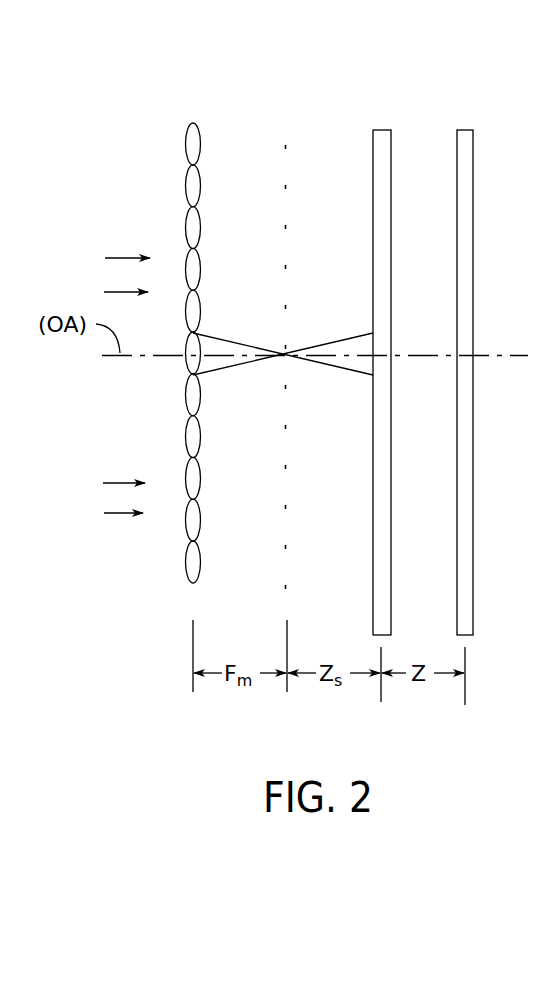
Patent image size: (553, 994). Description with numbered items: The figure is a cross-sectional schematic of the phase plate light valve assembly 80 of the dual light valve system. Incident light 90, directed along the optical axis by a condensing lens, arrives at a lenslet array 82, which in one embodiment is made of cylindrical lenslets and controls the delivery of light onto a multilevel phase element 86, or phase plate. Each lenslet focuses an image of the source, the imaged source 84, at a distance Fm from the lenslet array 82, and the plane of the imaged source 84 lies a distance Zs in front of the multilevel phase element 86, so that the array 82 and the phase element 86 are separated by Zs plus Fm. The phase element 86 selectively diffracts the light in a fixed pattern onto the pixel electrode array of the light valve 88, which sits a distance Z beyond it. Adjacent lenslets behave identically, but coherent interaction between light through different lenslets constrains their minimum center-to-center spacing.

The lenslet array 80 is at (139, 337).
The lenslet array 82 is at (196, 118).
The imaged source 84 is at (292, 135).
The multilevel phase element 86 is at (385, 130).
The light valve 88 is at (465, 130).
The incident light 90 is at (122, 256).